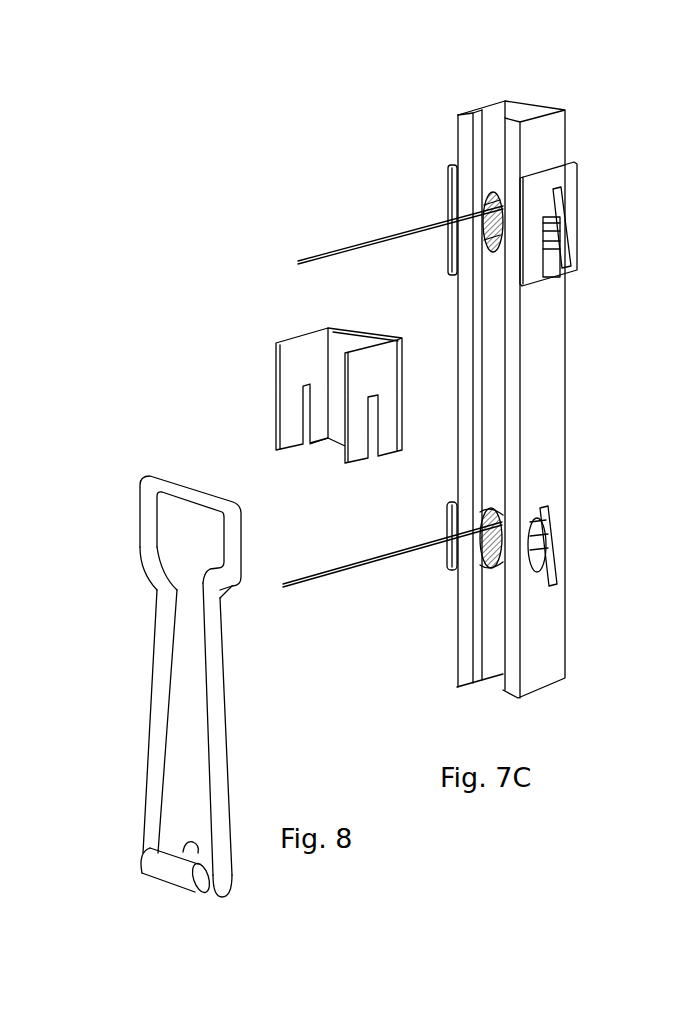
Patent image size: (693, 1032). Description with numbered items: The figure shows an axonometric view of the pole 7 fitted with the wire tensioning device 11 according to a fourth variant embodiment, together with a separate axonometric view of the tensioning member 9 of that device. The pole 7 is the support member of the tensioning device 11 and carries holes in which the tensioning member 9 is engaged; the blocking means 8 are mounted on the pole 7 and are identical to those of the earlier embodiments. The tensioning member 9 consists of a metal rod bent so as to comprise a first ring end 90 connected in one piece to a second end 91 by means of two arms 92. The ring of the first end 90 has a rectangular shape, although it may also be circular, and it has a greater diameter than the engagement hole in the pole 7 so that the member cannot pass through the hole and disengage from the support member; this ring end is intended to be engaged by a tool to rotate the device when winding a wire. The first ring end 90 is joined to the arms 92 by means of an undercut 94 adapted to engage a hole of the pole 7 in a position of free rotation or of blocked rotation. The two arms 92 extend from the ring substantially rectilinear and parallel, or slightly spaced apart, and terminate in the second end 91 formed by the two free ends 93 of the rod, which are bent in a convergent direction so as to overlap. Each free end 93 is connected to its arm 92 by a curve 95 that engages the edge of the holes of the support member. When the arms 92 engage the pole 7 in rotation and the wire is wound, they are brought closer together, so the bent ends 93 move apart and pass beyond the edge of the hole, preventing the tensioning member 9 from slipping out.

In FIG. 7C, the pole 7 is at (503, 101).
In FIG. 7C, the blocking means 8 is at (567, 145).
In FIG. 7C, the tensioning member 9 is at (567, 333).
In FIG. 8, the tensioning member 9 is at (170, 462).
In FIG. 7C, the tensioning device 11 is at (652, 81).
In FIG. 8, the first ring end 90 is at (142, 477).
In FIG. 8, the second end 91 is at (238, 898).
In FIG. 8, the arms 92 is at (213, 708).
In FIG. 8, the free ends 93 is at (183, 875).
In FIG. 8, the undercut 94 is at (160, 591).
In FIG. 8, the curve 95 is at (147, 853).